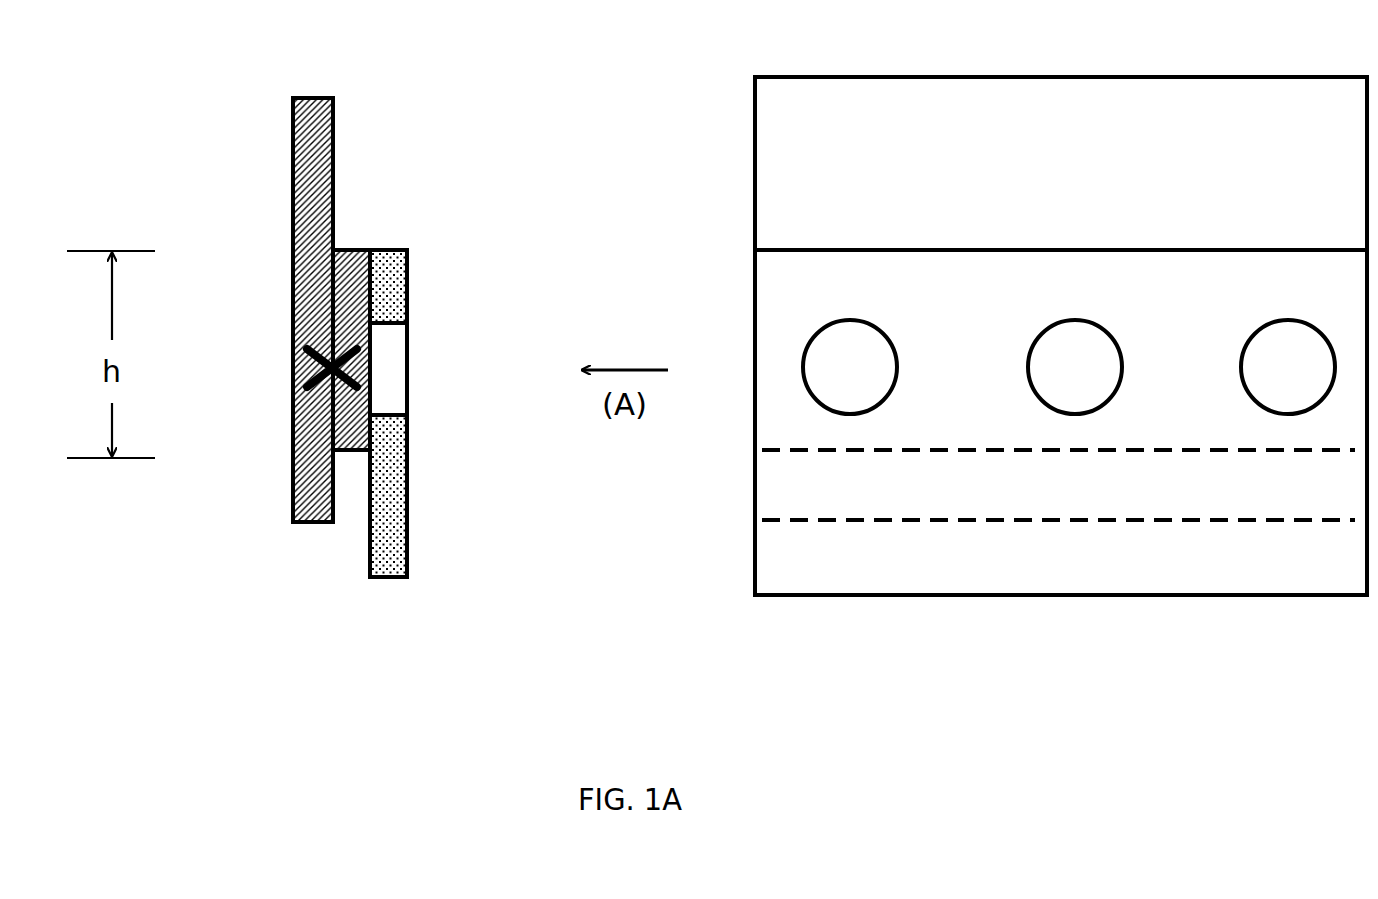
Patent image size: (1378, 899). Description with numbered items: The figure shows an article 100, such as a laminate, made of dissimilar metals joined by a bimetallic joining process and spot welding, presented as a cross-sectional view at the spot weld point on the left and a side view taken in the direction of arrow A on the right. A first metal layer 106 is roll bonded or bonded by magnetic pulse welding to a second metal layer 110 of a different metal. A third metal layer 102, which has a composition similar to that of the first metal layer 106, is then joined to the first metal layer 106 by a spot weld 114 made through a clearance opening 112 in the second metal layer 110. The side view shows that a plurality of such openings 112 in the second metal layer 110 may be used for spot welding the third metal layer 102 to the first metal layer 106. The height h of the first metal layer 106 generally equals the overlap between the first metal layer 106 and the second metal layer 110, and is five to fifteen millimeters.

The article 100 is at (460, 178).
The third metal layer 102 is at (330, 99).
The first metal layer 106 is at (341, 250).
The second metal layer 110 is at (408, 281).
The clearance opening 112 is at (408, 365).
The spot weld 114 is at (293, 392).